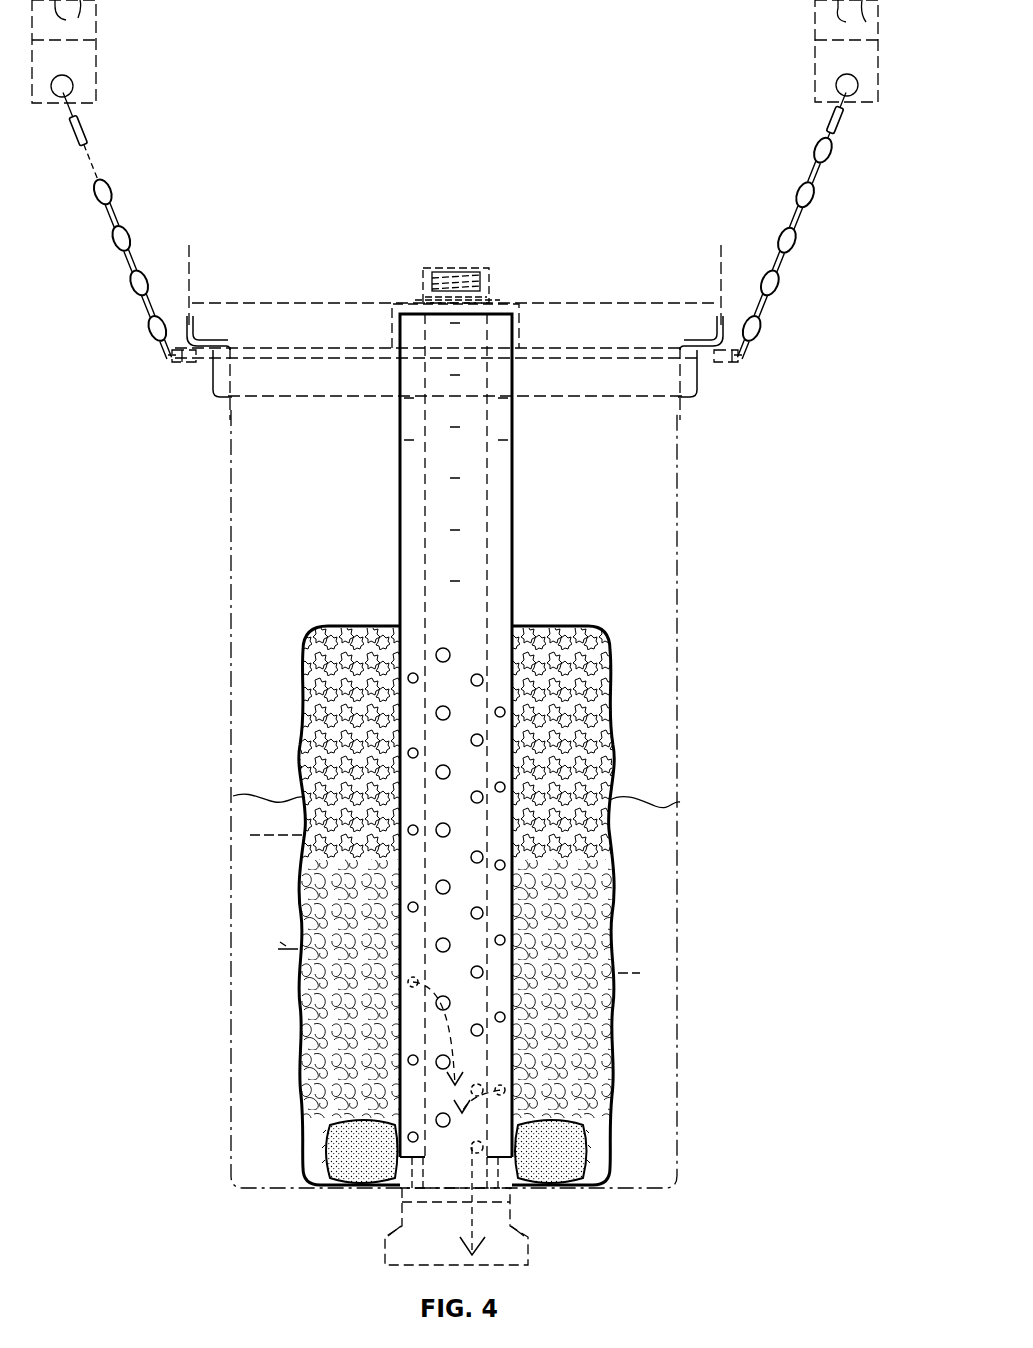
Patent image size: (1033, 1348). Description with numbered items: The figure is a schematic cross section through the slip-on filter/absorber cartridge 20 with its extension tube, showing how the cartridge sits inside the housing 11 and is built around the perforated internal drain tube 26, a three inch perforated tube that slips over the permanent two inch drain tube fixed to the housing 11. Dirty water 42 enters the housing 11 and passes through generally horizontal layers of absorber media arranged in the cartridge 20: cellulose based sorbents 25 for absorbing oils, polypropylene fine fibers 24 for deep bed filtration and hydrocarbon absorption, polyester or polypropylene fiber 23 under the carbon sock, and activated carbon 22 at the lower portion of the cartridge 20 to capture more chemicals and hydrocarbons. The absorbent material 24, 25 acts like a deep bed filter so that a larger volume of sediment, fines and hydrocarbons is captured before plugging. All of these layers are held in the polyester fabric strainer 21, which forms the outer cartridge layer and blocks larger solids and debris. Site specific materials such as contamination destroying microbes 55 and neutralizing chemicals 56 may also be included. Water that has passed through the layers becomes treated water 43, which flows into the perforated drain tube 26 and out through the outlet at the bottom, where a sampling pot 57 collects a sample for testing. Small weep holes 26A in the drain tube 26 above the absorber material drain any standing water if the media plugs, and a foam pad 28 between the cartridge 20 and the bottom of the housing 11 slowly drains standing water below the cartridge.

The housing 11 is at (677, 672).
The slip-on filter/absorber cartridge 20 is at (367, 620).
The polyester fabric strainer 21 is at (617, 880).
The activated carbon absorber material 22 is at (607, 1085).
The polyester or polypropylene fiber 23 is at (607, 1160).
The polypropylene fine fibers 24 is at (330, 942).
The cellulose based sorbents 25 is at (335, 734).
The perforated internal drain tube 26 is at (514, 607).
The weep holes 26A is at (497, 493).
The foam pad 28 is at (613, 1184).
The dirty water 42 is at (301, 833).
The treated water 43 is at (453, 1033).
The contamination destroying microbes 55 is at (617, 905).
The neutralizing chemicals 56 is at (617, 985).
The sampling pot 57 is at (533, 1268).